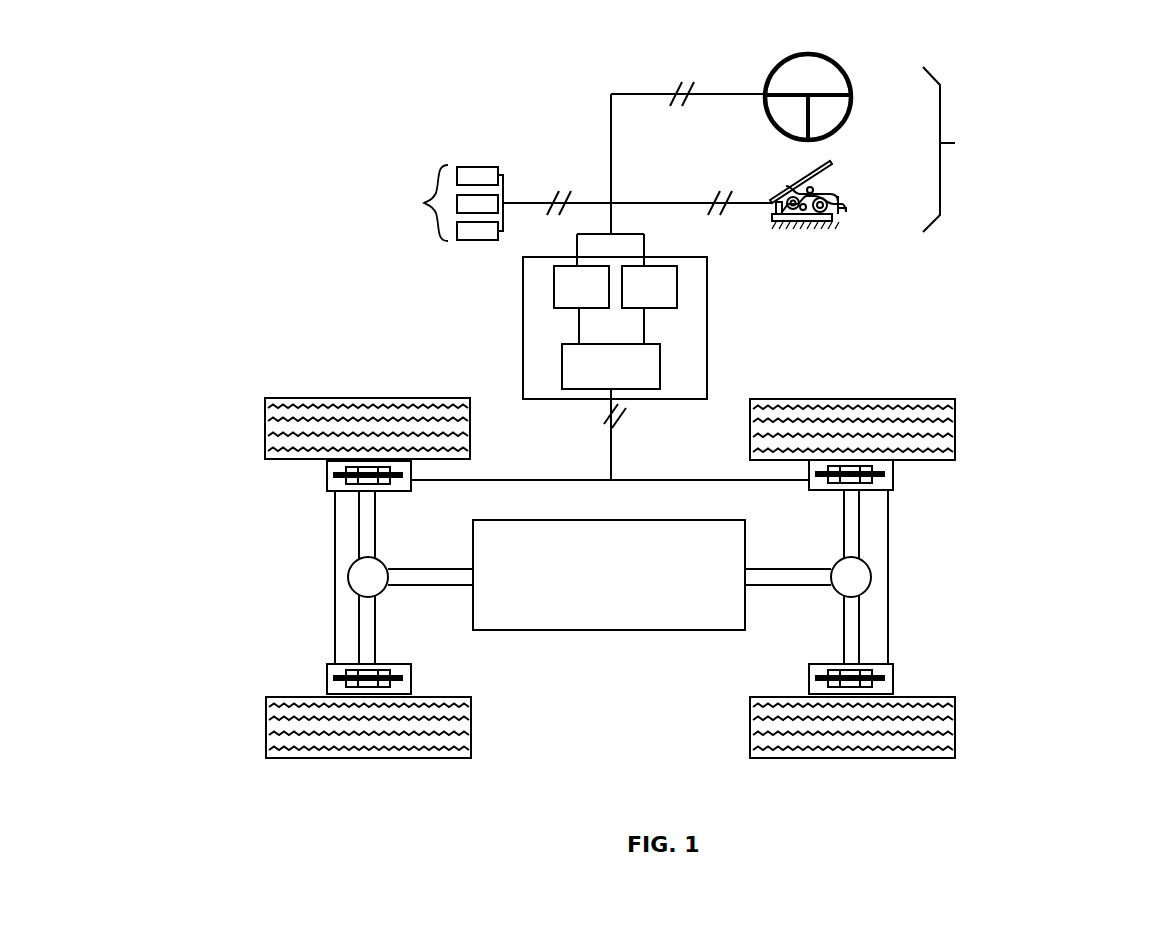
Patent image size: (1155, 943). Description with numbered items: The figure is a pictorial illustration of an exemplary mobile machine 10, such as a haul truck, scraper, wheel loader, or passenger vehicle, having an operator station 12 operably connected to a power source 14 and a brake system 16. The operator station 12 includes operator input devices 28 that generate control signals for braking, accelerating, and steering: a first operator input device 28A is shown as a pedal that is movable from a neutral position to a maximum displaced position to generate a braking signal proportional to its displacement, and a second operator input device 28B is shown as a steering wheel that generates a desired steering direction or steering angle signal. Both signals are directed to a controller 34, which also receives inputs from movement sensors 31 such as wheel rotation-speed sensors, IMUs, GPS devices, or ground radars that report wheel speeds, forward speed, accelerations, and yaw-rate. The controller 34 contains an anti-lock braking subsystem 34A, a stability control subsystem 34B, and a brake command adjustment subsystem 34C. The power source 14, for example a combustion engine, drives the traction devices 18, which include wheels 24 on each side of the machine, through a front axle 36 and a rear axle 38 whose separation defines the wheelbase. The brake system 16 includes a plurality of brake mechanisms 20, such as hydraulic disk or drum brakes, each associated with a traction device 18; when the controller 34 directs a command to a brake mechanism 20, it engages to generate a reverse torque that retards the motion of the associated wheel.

The mobile machine 10 is at (252, 80).
The operator station 12 is at (954, 149).
The power source 14 is at (609, 575).
The brake system 16 is at (1068, 541).
The traction devices 18 is at (617, 564).
The brake mechanisms 20 is at (615, 577).
The wheels 24 is at (266, 401).
The operator input devices 28 is at (903, 38).
The first operator input device 28A is at (840, 197).
The second operator input device 28B is at (853, 97).
The movement sensors 31 is at (450, 203).
The controller 34 is at (639, 357).
The anti-lock braking subsystem 34A is at (581, 287).
The stability control subsystem 34B is at (649, 287).
The brake command adjustment subsystem 34C is at (611, 366).
The front axle 36 is at (842, 530).
The rear axle 38 is at (376, 527).